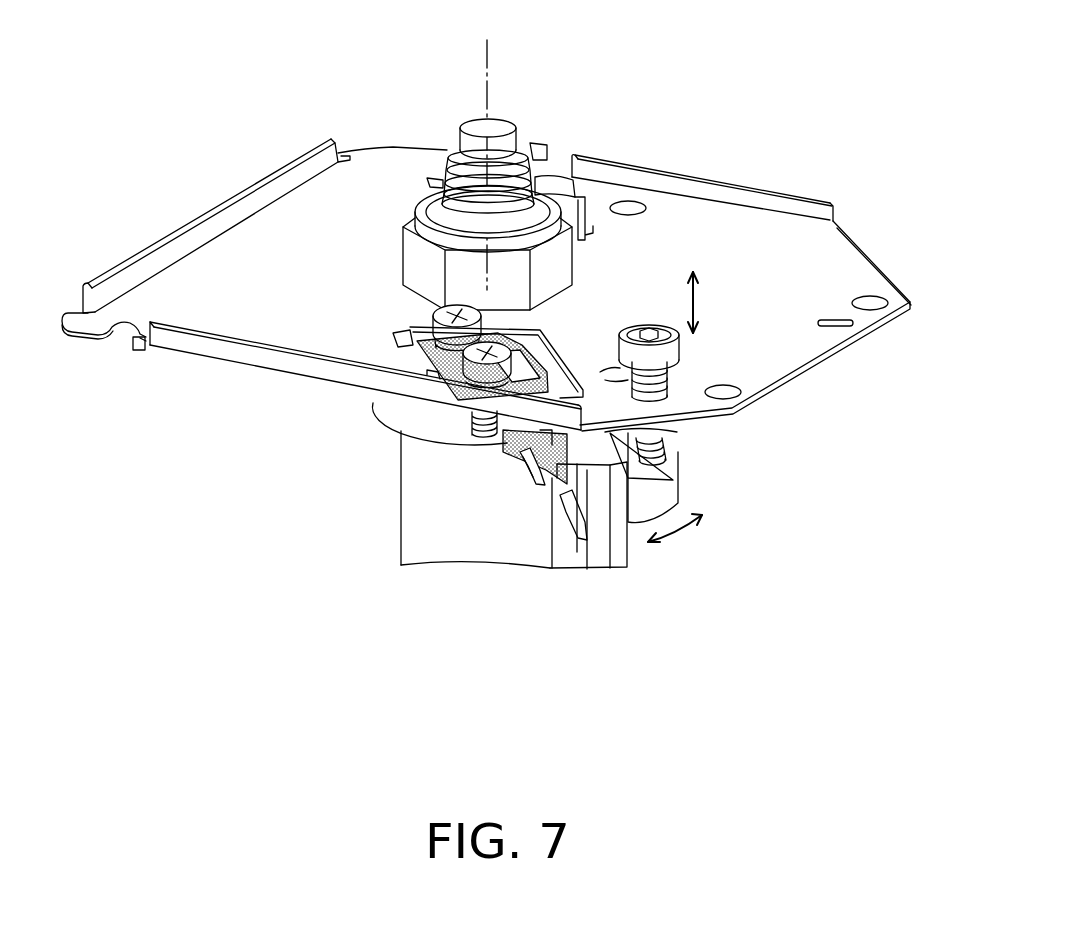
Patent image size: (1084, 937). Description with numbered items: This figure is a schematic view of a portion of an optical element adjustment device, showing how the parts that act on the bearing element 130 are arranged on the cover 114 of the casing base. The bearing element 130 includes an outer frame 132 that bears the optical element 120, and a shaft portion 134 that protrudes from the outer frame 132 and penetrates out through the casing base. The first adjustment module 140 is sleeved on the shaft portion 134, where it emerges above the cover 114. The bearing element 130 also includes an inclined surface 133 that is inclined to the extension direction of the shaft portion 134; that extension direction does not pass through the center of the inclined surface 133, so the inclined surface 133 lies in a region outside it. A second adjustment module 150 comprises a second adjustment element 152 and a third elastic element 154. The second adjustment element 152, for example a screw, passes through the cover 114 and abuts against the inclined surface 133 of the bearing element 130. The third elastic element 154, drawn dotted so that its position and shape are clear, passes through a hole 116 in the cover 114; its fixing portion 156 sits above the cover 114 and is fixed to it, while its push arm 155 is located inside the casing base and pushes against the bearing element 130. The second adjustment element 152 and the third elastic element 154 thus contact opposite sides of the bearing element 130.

The cover 114 is at (817, 365).
The hole 116 is at (542, 346).
The optical element 120 is at (412, 507).
The bearing element 130 is at (742, 611).
The outer frame 132 is at (622, 555).
The inclined surface 133 is at (673, 480).
The shaft portion 134 is at (477, 127).
The first adjustment module 140 is at (501, 184).
The second adjustment module 150 is at (664, 471).
The second adjustment element 152 is at (649, 327).
The third elastic element 154 is at (633, 496).
The push arm 155 is at (540, 477).
The fixing portion 156 is at (462, 408).